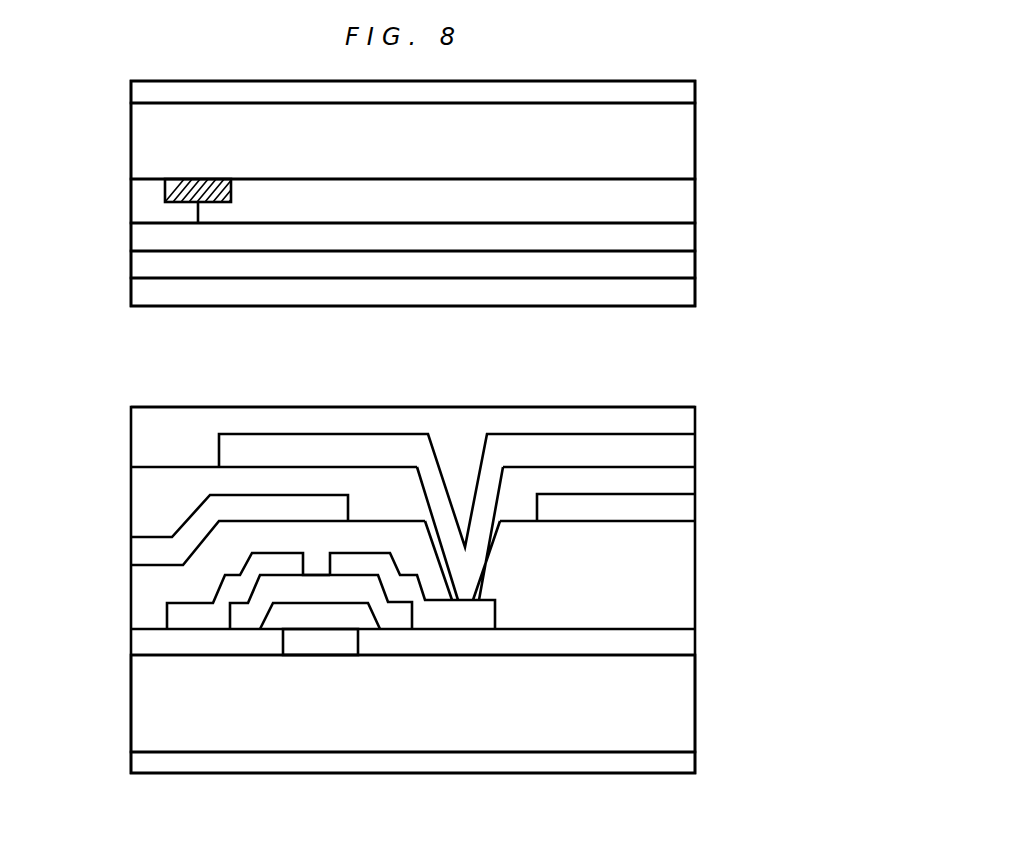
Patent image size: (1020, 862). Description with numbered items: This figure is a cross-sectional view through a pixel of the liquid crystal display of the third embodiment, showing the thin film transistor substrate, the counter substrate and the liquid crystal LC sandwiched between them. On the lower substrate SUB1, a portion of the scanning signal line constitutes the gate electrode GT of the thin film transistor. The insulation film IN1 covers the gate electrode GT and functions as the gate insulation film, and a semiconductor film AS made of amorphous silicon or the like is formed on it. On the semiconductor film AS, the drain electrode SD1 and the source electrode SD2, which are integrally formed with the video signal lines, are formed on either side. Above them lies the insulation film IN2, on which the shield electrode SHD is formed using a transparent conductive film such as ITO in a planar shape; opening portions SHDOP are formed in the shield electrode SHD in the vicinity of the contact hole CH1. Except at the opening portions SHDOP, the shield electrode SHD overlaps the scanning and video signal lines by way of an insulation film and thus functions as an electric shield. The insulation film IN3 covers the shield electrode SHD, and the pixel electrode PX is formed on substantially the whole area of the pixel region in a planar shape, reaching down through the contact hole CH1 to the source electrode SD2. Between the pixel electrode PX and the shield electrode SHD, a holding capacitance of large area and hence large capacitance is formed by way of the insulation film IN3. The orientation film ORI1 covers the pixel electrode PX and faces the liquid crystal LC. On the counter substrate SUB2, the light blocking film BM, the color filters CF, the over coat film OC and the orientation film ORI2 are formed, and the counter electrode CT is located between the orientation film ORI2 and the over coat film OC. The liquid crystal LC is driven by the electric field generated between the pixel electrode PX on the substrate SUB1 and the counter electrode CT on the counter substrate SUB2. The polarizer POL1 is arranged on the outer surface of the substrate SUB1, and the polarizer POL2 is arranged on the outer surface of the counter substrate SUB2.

The polarizer POL2 is at (684, 94).
The counter substrate SUB2 is at (684, 142).
The color filters CF is at (684, 198).
The over coat film OC is at (684, 239).
The counter electrode CT is at (684, 269).
The orientation film ORI2 is at (684, 292).
The light blocking film BM is at (165, 188).
The liquid crystal LC is at (600, 354).
The orientation film ORI1 is at (680, 398).
The pixel electrode PX is at (676, 446).
The insulation film IN3 is at (684, 475).
The shield electrode SHD is at (680, 508).
The insulation film IN2 is at (676, 580).
The contact hole CH1 is at (460, 455).
The opening portions SHDOP is at (365, 495).
The source electrode SD2 is at (458, 623).
The drain electrode SD1 is at (183, 617).
The semiconductor film AS is at (248, 618).
The insulation film IN1 is at (682, 644).
The gate electrode GT is at (330, 648).
The substrate SUB1 is at (684, 696).
The polarizer POL1 is at (684, 763).